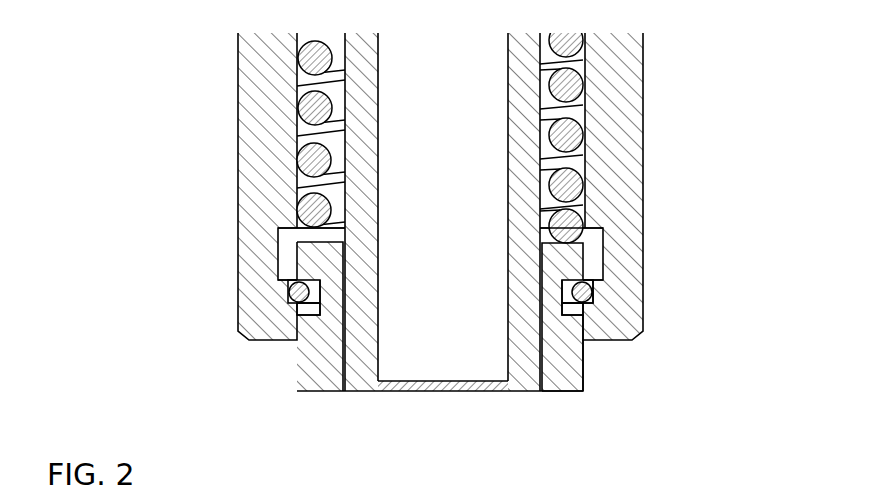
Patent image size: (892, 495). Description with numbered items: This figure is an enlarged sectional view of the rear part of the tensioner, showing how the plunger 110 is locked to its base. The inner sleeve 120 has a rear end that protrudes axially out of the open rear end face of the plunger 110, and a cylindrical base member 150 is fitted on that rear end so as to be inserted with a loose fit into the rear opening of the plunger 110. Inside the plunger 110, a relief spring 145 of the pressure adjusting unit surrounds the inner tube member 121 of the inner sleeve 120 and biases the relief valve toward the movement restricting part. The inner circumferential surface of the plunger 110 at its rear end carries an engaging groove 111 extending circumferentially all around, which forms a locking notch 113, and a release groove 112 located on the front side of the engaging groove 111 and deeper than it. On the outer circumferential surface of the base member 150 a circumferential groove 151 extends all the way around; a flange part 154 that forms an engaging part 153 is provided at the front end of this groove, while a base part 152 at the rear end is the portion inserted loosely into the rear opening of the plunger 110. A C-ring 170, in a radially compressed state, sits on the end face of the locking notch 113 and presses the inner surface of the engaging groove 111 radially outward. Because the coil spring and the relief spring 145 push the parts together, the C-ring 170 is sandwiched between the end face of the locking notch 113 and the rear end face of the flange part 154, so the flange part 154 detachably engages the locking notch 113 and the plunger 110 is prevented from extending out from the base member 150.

The plunger 110 is at (648, 56).
The inner sleeve 120 is at (343, 80).
The inner tube member 121 is at (363, 392).
The relief spring 145 is at (297, 115).
The release groove 112 is at (280, 265).
The base part 152 is at (583, 358).
The engaging part 153 is at (290, 245).
The flange part 154 is at (577, 253).
The engaging groove 111 is at (290, 293).
The C-ring 170 is at (593, 292).
The locking notch 113 is at (312, 316).
The circumferential groove 151 is at (568, 317).
The base member 150 is at (587, 393).